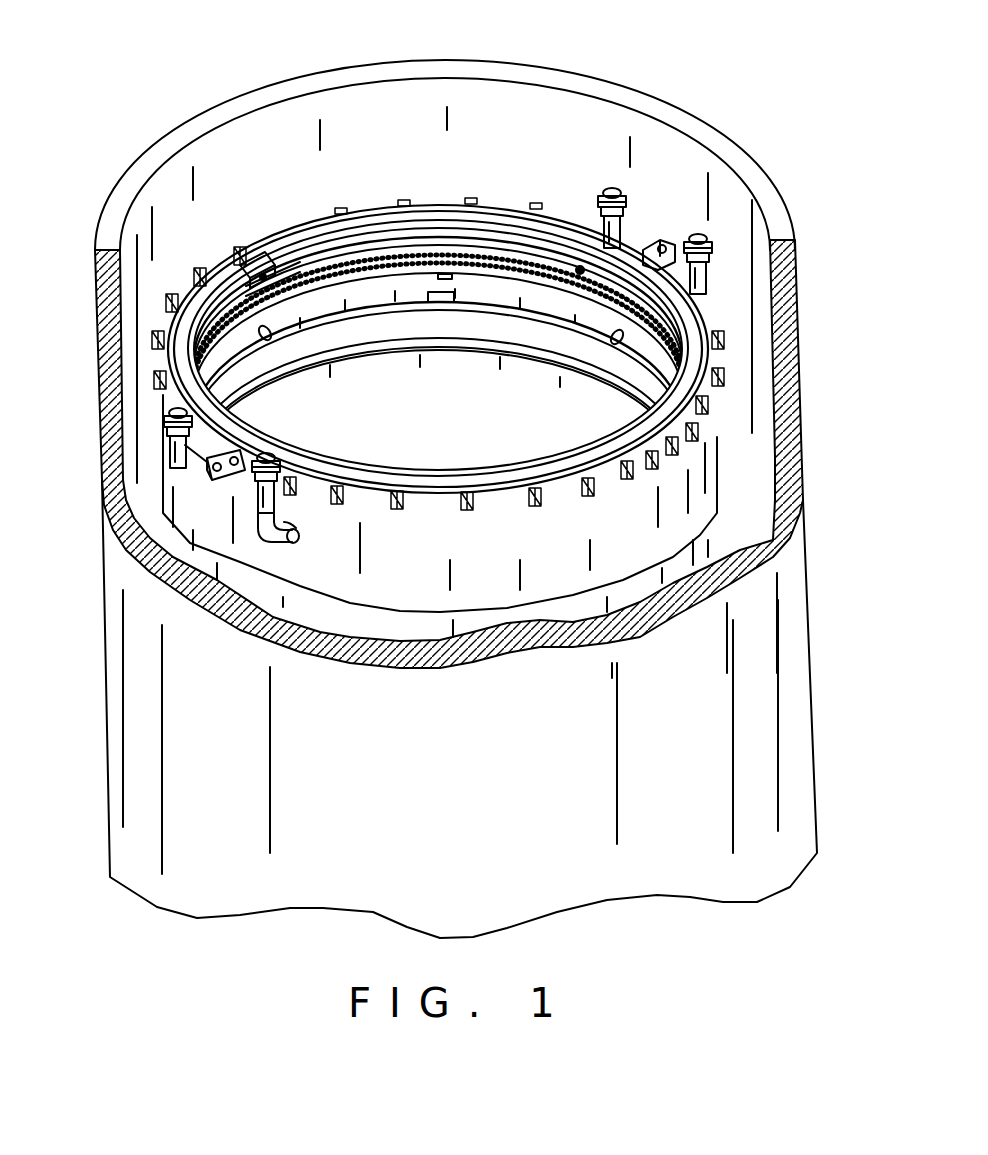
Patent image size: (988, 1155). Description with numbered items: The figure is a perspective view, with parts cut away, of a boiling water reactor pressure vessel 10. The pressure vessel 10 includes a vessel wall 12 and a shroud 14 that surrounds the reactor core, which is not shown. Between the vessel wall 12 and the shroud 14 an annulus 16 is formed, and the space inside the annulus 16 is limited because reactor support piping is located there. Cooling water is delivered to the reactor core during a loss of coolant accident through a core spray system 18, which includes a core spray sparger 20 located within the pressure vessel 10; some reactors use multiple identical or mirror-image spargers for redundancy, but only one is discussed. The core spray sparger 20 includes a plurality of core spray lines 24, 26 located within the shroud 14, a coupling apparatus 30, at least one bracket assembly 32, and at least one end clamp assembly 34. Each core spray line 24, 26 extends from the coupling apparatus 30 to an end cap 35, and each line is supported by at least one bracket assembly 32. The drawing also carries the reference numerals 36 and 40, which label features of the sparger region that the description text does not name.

The boiling water reactor pressure vessel 10 is at (451, 473).
The vessel wall 12 is at (740, 150).
The shroud 14 is at (690, 452).
The annulus 16 is at (137, 415).
The core spray system 18 is at (459, 120).
The core spray sparger 20 is at (445, 310).
The core spray line 24 is at (540, 257).
The core spray line 26 is at (657, 237).
The coupling apparatus 30 is at (585, 318).
The bracket assembly 32 is at (452, 226).
The end clamp assembly 34 is at (253, 293).
The end cap 35 is at (263, 275).
The bearing ball 36 is at (583, 266).
The elbow fitting 40 is at (217, 560).